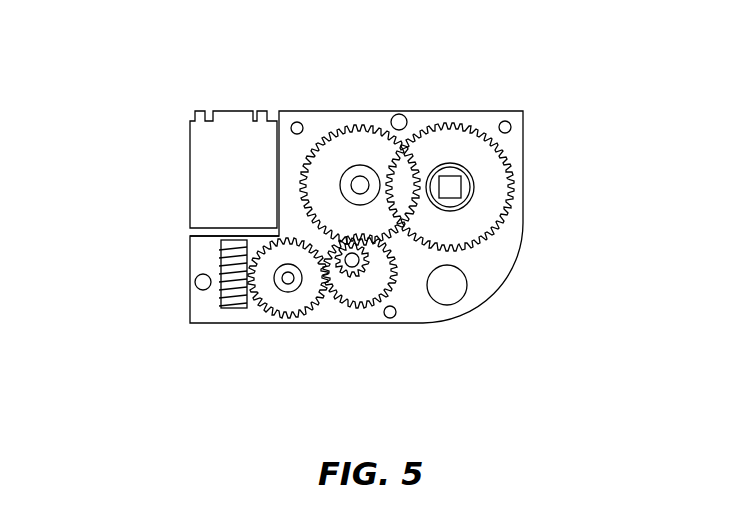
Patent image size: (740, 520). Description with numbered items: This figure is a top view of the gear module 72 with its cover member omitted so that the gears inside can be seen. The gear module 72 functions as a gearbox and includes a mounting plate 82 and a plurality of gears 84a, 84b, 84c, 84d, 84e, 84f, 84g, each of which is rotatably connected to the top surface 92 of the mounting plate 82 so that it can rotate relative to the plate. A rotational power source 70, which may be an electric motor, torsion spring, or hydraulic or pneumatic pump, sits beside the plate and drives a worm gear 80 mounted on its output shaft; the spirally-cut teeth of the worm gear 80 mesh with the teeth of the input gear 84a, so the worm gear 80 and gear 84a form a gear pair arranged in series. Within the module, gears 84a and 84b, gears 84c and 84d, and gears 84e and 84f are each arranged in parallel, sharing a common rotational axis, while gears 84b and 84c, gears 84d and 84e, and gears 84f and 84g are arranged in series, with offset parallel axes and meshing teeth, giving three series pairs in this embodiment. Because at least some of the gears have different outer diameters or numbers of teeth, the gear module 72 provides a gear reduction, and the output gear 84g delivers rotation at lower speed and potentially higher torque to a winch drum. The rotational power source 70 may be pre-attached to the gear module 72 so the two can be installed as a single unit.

The rotational power source 70 is at (186, 157).
The gear module 72 is at (572, 98).
The worm gear 80 is at (220, 247).
The mounting plate 82 is at (495, 272).
The gear 84a is at (260, 310).
The gear 84b is at (298, 285).
The gear 84c is at (350, 277).
The gear 84d is at (368, 278).
The gear 84e is at (332, 135).
The gear 84f is at (362, 180).
The gear 84g is at (458, 130).
The top surface 92 is at (465, 307).